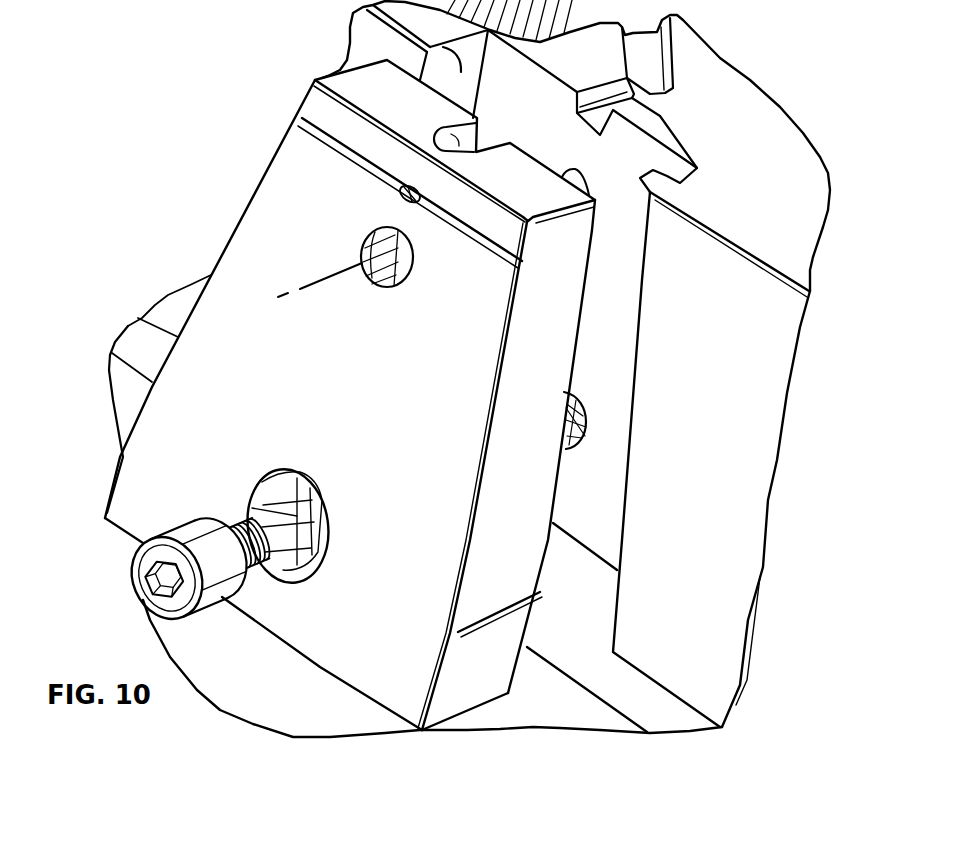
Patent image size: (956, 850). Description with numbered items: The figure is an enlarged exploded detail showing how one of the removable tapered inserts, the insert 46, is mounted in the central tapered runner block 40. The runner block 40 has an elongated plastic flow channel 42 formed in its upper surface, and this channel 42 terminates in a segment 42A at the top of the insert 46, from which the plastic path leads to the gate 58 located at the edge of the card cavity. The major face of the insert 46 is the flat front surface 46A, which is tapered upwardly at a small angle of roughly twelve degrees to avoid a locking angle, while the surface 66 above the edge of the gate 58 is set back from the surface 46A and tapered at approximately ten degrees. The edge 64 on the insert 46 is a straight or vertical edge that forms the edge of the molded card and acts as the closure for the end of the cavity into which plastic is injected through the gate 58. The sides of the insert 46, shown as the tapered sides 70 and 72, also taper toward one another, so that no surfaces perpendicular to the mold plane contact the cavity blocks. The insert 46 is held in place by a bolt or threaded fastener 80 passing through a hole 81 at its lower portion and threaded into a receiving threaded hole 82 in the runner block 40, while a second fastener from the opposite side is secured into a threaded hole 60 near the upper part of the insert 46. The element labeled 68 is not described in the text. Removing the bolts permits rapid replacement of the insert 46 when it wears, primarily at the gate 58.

The runner block 40 is at (743, 113).
The channel 42 is at (665, 63).
The segment 42A is at (480, 131).
The insert 46 is at (355, 78).
The front surface 46A is at (280, 202).
The gate 58 is at (400, 192).
The threaded hole 60 is at (397, 275).
The edge 64 is at (297, 121).
The surface 66 is at (511, 241).
The top surface 68 is at (317, 80).
The tapered side 70 is at (211, 275).
The tapered side 72 is at (510, 567).
The bolt or threaded fastener 80 is at (430, 47).
The hole 81 is at (310, 568).
The threaded hole 82 is at (650, 192).